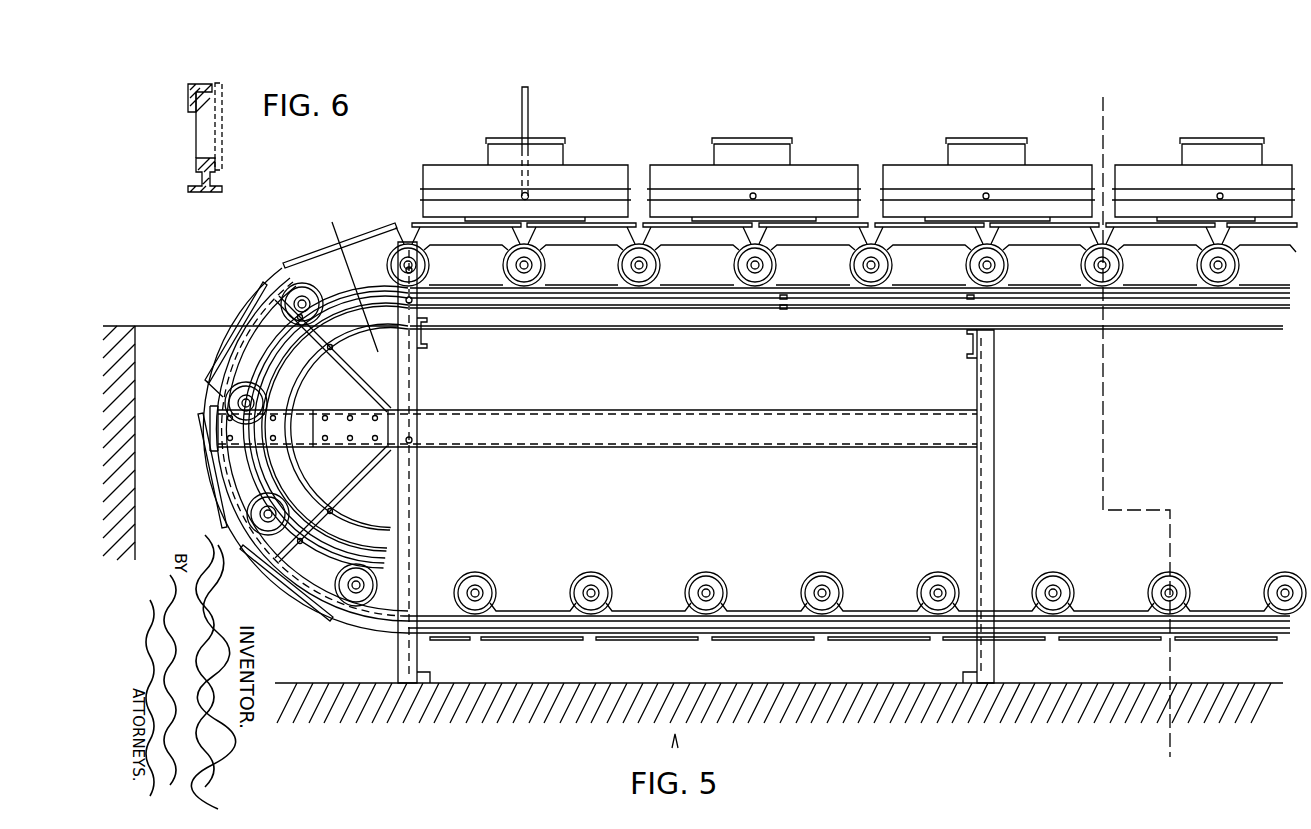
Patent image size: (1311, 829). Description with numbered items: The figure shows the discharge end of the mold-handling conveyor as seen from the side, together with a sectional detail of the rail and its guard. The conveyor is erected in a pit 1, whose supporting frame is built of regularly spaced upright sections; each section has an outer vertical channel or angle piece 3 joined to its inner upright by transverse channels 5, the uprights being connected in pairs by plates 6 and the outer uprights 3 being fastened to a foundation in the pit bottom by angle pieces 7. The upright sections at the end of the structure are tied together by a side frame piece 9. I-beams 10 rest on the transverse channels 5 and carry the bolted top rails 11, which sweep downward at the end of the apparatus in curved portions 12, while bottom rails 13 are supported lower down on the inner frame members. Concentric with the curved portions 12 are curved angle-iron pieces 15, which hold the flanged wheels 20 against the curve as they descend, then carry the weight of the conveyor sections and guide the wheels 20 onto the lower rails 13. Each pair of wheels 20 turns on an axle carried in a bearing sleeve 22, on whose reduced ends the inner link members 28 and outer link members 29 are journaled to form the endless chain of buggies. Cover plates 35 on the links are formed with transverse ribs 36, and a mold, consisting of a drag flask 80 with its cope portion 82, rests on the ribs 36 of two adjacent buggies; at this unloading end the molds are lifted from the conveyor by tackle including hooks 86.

In FIG. 5, the pit 1 is at (135, 433).
In FIG. 5, the outer vertical channel or angle piece 3 is at (404, 502).
In FIG. 5, the transverse channel 5 is at (426, 340).
In FIG. 5, the plate 6 is at (352, 286).
In FIG. 5, the angle piece 7 is at (1135, 431).
In FIG. 5, the side frame piece 9 is at (672, 410).
In FIG. 5, the I-beam 10 is at (747, 318).
In FIG. 5, the top rail 11 is at (688, 292).
In FIG. 6, the top rail 11 is at (196, 177).
In FIG. 5, the curved rail portion 12 is at (337, 537).
In FIG. 5, the bottom rail 13 is at (745, 608).
In FIG. 5, the curved angle-iron piece 15 is at (298, 565).
In FIG. 6, the curved angle-iron piece 15 is at (187, 97).
In FIG. 5, the flanged wheel 20 is at (1058, 266).
In FIG. 6, the flanged wheel 20 is at (195, 135).
In FIG. 5, the sleeve 22 is at (1185, 266).
In FIG. 5, the inner link member 28 is at (820, 240).
In FIG. 5, the outer link member 29 is at (940, 240).
In FIG. 5, the cover plate 35 is at (225, 343).
In FIG. 5, the transverse rib 36 is at (252, 313).
In FIG. 5, the drag flask 80 is at (459, 206).
In FIG. 5, the cope portion 82 is at (587, 173).
In FIG. 5, the hook 86 is at (530, 110).